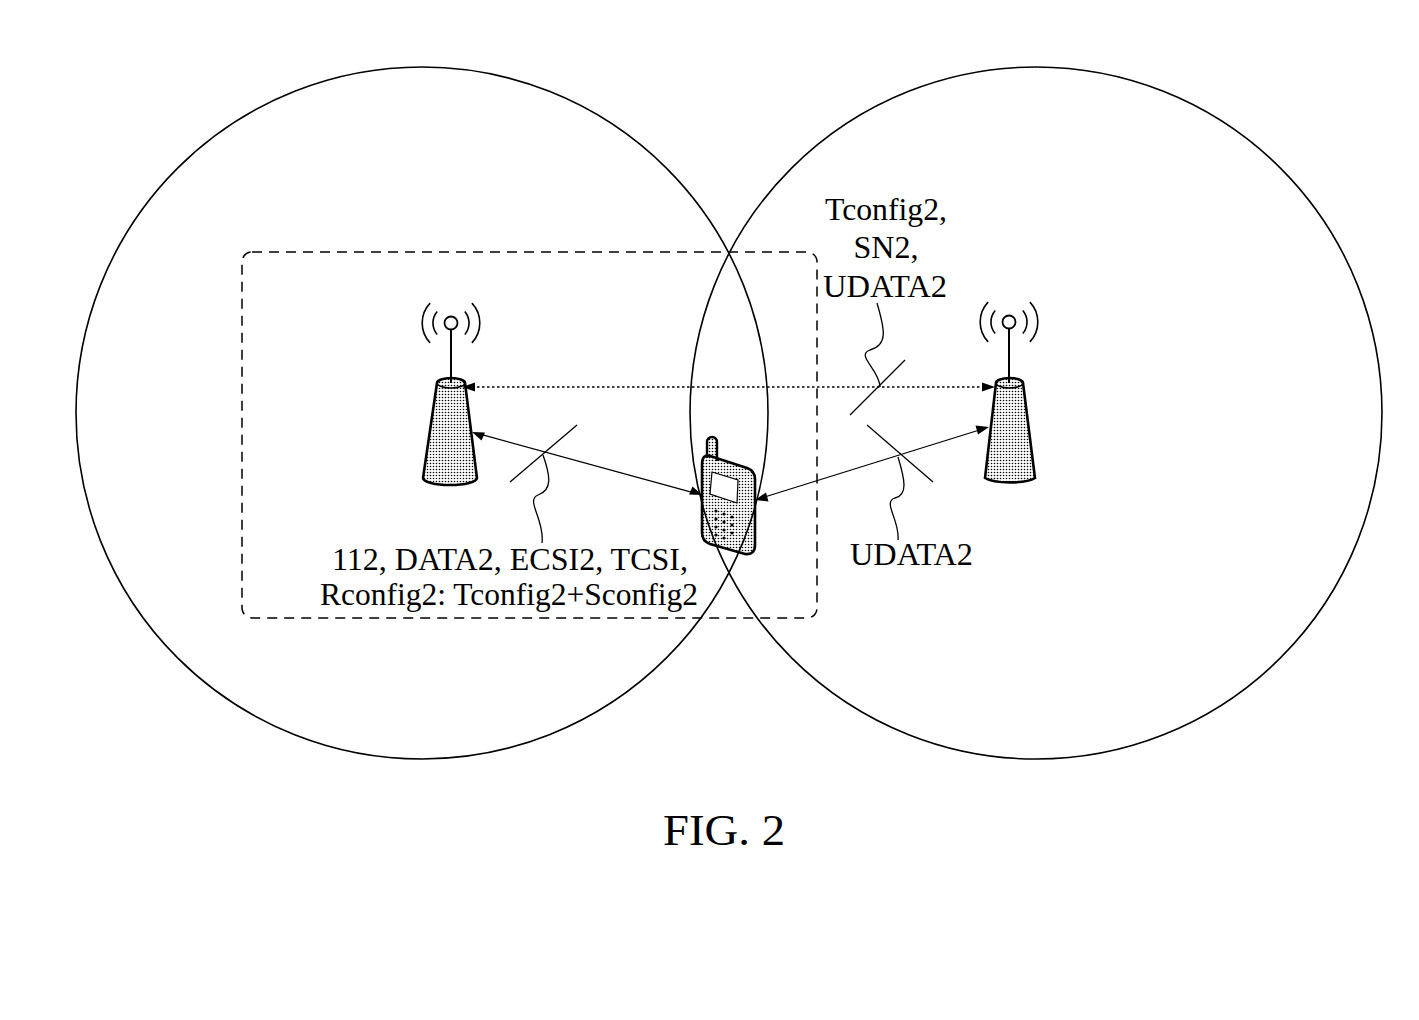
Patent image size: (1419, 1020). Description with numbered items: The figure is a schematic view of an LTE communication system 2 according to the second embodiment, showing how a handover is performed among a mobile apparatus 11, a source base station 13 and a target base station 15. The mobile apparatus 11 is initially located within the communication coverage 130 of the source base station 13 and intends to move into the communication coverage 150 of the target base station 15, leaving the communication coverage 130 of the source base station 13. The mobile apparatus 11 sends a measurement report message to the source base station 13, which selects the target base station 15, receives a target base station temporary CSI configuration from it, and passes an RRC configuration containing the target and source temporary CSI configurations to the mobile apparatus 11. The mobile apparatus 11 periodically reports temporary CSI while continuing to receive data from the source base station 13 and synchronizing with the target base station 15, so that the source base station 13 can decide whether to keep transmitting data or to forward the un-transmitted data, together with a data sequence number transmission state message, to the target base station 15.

The LTE communication system 2 is at (355, 252).
The mobile apparatus 11 is at (737, 560).
The source base station 13 is at (430, 427).
The target base station 15 is at (1027, 425).
The communication coverage of the source base station 130 is at (192, 672).
The communication coverage of the target base station 150 is at (1245, 137).